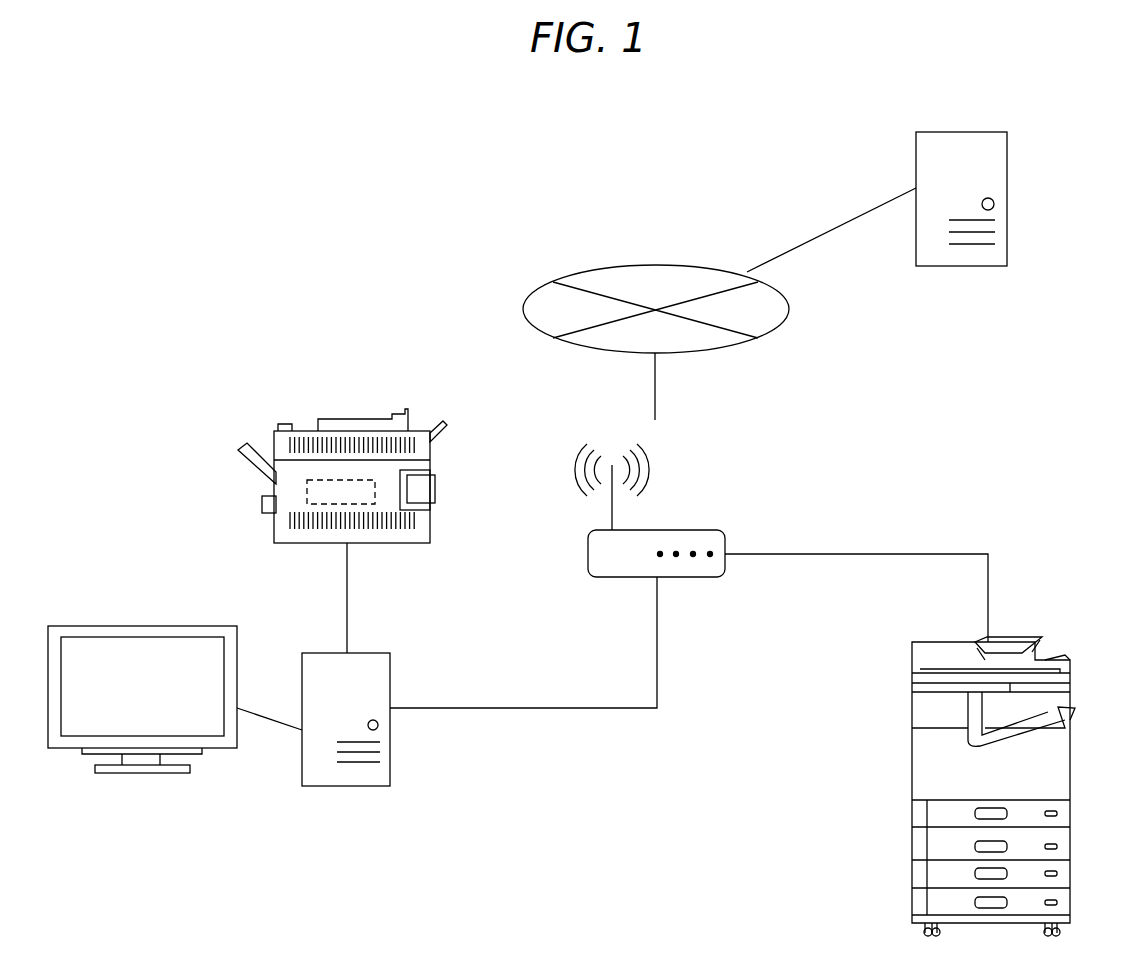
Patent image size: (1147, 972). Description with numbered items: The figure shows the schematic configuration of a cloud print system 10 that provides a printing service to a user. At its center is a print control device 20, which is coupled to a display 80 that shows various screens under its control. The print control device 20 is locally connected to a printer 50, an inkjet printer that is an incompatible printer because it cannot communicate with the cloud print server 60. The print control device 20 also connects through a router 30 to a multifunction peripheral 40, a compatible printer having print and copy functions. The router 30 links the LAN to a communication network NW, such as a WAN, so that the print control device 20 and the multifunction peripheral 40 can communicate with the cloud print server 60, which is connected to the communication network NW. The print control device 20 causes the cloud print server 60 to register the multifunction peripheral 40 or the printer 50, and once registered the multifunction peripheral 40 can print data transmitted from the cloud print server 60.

The cloud print system 10 is at (398, 202).
The communication network NW is at (573, 275).
The cloud print server 60 is at (1007, 157).
The router 30 is at (705, 578).
The printer 50 is at (346, 417).
The print control device 20 is at (325, 788).
The display 80 is at (143, 626).
The multifunction peripheral 40 is at (1072, 710).